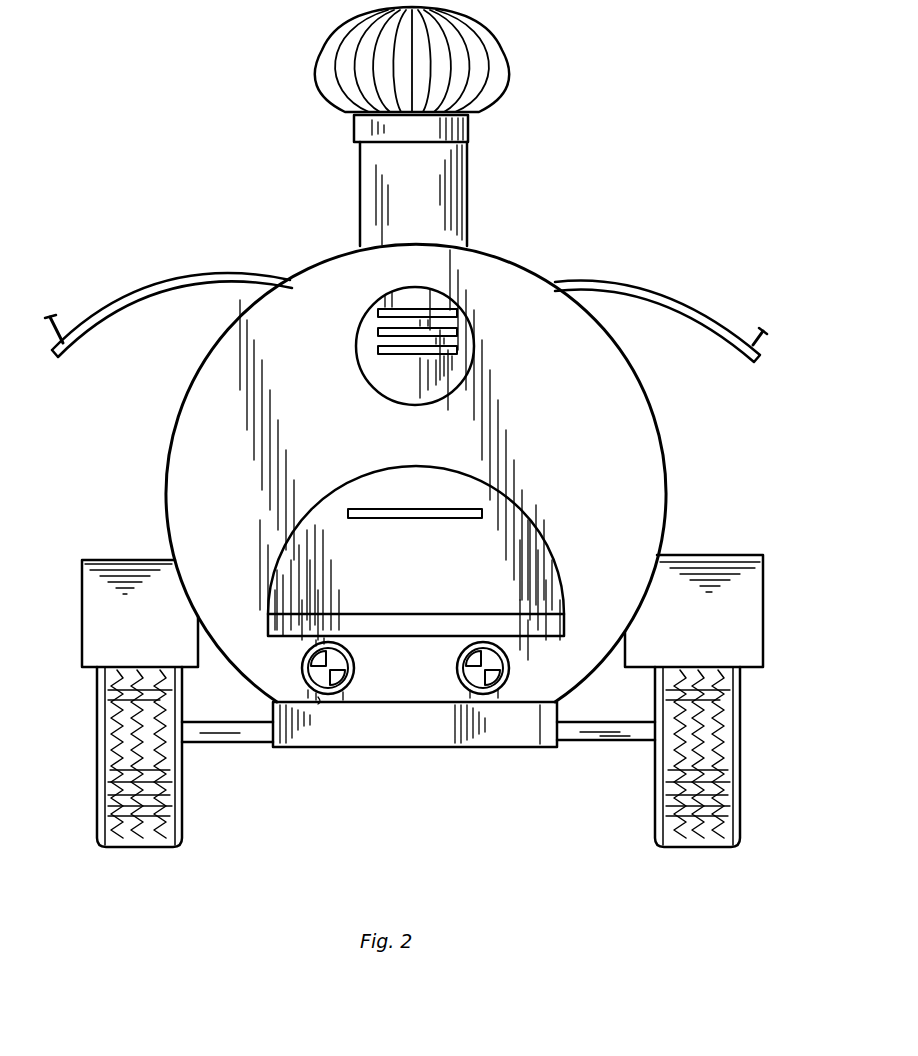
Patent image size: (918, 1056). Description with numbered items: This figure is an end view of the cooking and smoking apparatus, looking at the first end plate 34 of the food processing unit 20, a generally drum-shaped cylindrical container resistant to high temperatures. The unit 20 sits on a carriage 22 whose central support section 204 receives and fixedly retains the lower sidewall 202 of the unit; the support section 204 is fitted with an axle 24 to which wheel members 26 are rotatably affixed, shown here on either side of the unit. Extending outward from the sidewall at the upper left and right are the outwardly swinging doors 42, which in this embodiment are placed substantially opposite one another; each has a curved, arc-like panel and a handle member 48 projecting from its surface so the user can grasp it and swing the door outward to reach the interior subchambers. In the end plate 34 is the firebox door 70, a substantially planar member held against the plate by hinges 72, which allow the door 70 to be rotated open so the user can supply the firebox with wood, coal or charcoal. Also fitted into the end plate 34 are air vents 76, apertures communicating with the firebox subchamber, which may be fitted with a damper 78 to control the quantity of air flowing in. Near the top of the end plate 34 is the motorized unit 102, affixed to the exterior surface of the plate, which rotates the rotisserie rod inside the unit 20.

The food processing unit 20 is at (633, 453).
The carriage 22 is at (420, 730).
The axle 24 is at (617, 733).
The wheel members 26 is at (740, 768).
The first end plate 34 is at (487, 442).
The outwardly swinging doors 42 is at (188, 275).
The handle member 48 is at (768, 341).
The door 70 is at (458, 568).
The hinges 72 is at (438, 626).
The air vents 76 is at (318, 698).
The damper 78 is at (302, 667).
The motorized unit 102 is at (358, 340).
The lower sidewall 202 is at (542, 702).
The support section 204 is at (535, 735).